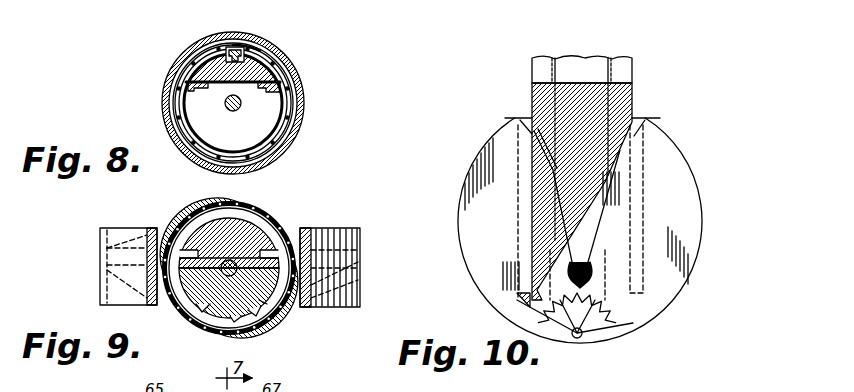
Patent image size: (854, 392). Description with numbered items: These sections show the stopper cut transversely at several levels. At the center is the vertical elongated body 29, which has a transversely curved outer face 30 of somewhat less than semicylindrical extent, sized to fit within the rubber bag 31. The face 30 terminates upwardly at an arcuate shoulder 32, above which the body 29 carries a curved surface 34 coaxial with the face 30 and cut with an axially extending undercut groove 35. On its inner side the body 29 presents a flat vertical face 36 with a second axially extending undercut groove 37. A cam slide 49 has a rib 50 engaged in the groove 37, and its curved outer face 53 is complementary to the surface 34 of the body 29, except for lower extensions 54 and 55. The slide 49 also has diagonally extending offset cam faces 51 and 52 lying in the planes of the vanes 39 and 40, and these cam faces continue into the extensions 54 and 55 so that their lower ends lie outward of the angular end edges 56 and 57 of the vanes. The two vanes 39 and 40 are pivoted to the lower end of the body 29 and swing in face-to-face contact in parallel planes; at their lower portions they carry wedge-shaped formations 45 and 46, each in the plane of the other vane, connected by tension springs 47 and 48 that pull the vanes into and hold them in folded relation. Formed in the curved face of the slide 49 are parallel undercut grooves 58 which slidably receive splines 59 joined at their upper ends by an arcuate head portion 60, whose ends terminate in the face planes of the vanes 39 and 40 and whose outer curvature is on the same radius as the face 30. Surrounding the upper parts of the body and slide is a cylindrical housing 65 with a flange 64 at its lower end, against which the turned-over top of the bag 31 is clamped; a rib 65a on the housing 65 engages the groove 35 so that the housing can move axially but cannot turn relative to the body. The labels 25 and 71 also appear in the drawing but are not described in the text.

In FIG. 8, the bore 25 is at (295, 143).
In FIG. 8, the elongated body 29 is at (190, 52).
In FIG. 9, the elongated body 29 is at (200, 235).
In FIG. 10, the elongated body 29 is at (633, 63).
In FIG. 9, the curved outer face 30 is at (248, 214).
In FIG. 10, the curved outer face 30 is at (517, 242).
In FIG. 9, the rubber bag 31 is at (218, 204).
In FIG. 9, the arcuate shoulder 32 is at (258, 225).
In FIG. 10, the arcuate shoulder 32 is at (528, 117).
In FIG. 9, the curved surface 34 is at (284, 229).
In FIG. 8, the undercut groove 35 is at (289, 56).
In FIG. 8, the flat vertical face 36 is at (290, 95).
In FIG. 8, the undercut groove 37 is at (186, 66).
In FIG. 10, the undercut groove 37 is at (573, 72).
In FIG. 9, the vane 39 is at (147, 256).
In FIG. 10, the vane 39 is at (490, 143).
In FIG. 9, the vane 40 is at (360, 250).
In FIG. 10, the vane 40 is at (667, 158).
In FIG. 10, the wedge-shaped formation 45 is at (523, 320).
In FIG. 10, the wedge-shaped formation 46 is at (587, 333).
In FIG. 10, the tension spring 47 is at (558, 333).
In FIG. 10, the tension spring 48 is at (613, 333).
In FIG. 8, the cam slide 49 is at (268, 121).
In FIG. 10, the cam slide 49 is at (633, 93).
In FIG. 8, the rib 50 is at (222, 84).
In FIG. 10, the cam face 51 is at (563, 223).
In FIG. 10, the cam face 52 is at (593, 193).
In FIG. 9, the curved outer face 53 is at (190, 312).
In FIG. 10, the lower extension 54 is at (588, 300).
In FIG. 10, the lower extension 55 is at (517, 298).
In FIG. 10, the angular end edge 56 is at (645, 120).
In FIG. 10, the angular end edge 57 is at (520, 118).
In FIG. 9, the undercut grooves 58 is at (268, 318).
In FIG. 9, the splines 59 is at (238, 319).
In FIG. 9, the arcuate head portion 60 is at (208, 326).
In FIG. 8, the flange 64 is at (297, 78).
In FIG. 8, the cylindrical housing 65 is at (303, 116).
In FIG. 8, the rib 65a is at (248, 34).
In FIG. 8, the shaft 71 is at (228, 112).